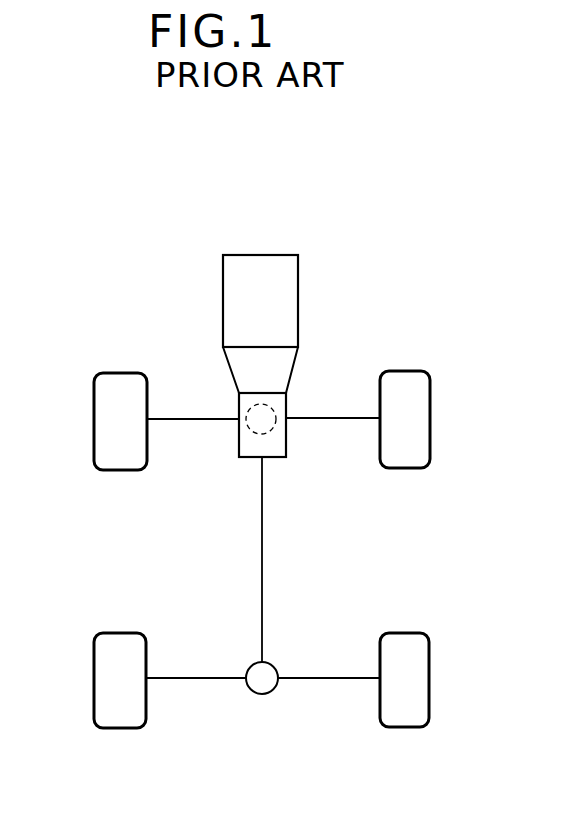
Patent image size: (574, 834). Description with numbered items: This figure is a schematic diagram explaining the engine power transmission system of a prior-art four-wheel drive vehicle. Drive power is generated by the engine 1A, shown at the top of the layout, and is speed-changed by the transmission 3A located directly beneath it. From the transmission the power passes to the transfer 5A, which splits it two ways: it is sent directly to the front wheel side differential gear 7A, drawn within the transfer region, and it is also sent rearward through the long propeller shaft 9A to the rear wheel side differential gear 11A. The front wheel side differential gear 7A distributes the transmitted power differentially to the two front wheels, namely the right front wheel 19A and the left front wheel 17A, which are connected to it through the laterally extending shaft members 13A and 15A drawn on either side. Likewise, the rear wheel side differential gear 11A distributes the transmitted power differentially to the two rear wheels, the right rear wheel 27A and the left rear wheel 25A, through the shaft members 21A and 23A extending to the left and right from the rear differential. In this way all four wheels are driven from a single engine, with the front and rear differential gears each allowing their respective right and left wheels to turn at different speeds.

The engine 1A is at (292, 278).
The transmission 3A is at (290, 368).
The transfer 5A is at (277, 453).
The front wheel side differential gear 7A is at (249, 430).
The propeller shaft 9A is at (263, 537).
The rear wheel side differential gear 11A is at (272, 665).
The left front axle 13A is at (173, 418).
The right front axle 15A is at (322, 418).
The left front wheel 17A is at (94, 408).
The right front wheel 19A is at (430, 388).
The left rear axle 21A is at (168, 680).
The right rear axle 23A is at (306, 680).
The left rear wheel 25A is at (97, 658).
The right rear wheel 27A is at (430, 650).